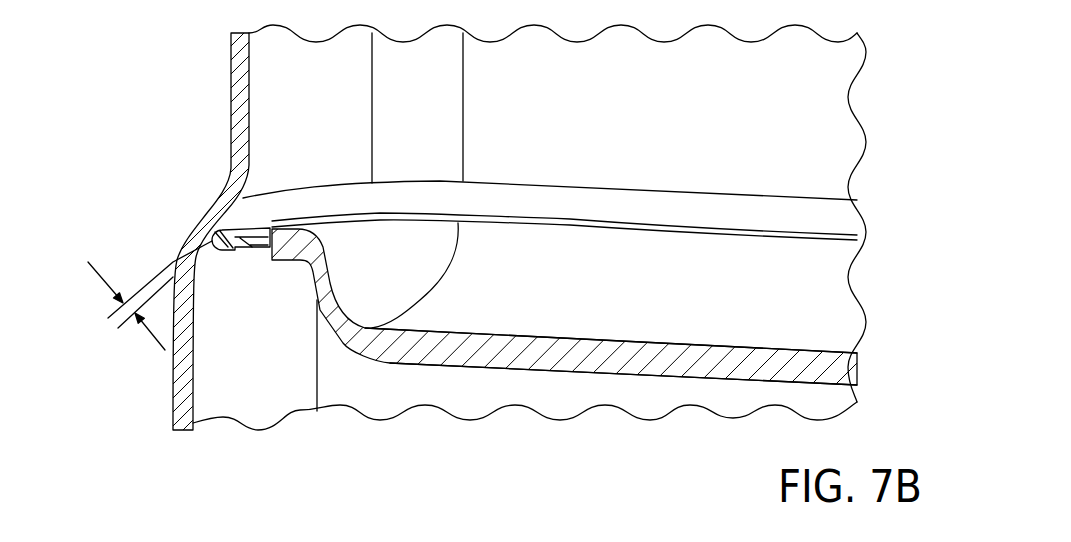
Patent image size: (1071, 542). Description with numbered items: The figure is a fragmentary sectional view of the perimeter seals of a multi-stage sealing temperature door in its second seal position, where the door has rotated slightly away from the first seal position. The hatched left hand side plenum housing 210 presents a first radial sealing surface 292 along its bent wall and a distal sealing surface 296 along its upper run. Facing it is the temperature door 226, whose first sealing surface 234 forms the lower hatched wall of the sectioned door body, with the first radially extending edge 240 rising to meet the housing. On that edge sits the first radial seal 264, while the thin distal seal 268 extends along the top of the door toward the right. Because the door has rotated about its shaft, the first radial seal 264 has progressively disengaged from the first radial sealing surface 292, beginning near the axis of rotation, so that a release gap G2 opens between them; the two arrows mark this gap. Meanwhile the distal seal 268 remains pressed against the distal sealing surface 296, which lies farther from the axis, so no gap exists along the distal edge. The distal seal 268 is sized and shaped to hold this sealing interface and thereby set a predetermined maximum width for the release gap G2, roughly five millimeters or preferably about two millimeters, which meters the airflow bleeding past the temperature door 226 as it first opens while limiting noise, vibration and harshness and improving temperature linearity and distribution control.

The plenum housing 210 is at (322, 112).
The temperature door 226 is at (579, 301).
The first sealing surface 234 is at (512, 358).
The first radially extending edge 240 is at (312, 268).
The first radial seal 264 is at (229, 252).
The distal seal 268 is at (533, 220).
The first radial sealing surface 292 is at (245, 215).
The distal sealing surface 296 is at (642, 210).
The release gap G2 is at (150, 332).